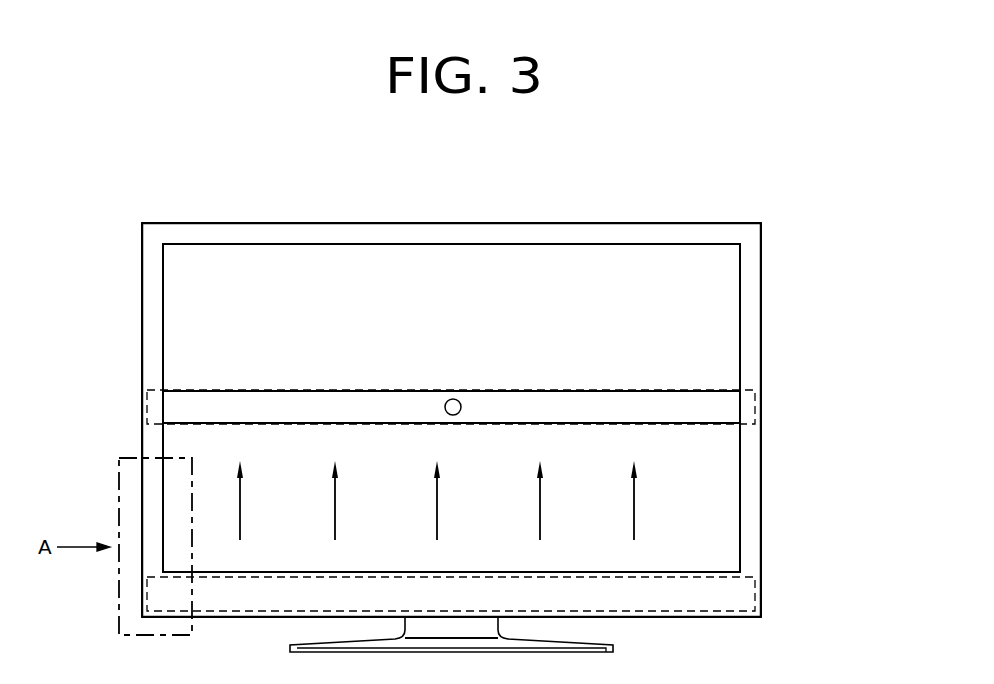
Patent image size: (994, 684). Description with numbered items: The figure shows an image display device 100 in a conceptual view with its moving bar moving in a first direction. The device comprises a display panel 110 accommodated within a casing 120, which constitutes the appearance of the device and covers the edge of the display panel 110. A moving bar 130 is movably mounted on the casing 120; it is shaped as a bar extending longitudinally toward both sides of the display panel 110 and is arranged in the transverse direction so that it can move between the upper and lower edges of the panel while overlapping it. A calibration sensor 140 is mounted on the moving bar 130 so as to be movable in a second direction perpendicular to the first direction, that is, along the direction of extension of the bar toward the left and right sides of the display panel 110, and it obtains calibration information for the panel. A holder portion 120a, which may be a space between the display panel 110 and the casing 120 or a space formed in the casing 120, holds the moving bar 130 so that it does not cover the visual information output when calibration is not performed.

The image display device 100 is at (774, 247).
The display panel 110 is at (730, 333).
The casing 120 is at (755, 289).
The holder portion 120a is at (725, 590).
The moving bar 130 is at (730, 407).
The calibration sensor 140 is at (453, 399).